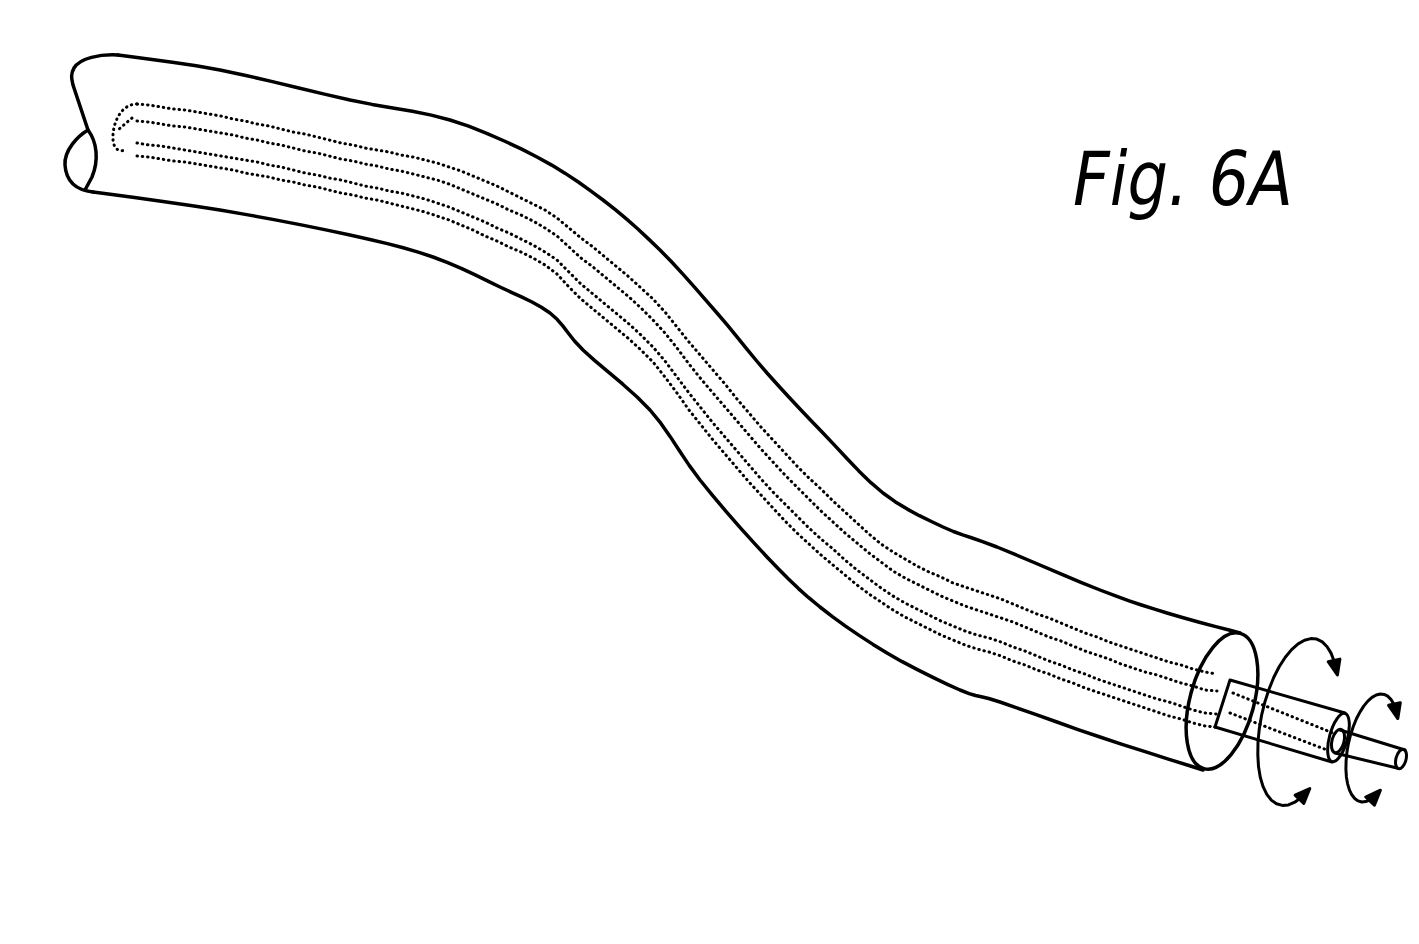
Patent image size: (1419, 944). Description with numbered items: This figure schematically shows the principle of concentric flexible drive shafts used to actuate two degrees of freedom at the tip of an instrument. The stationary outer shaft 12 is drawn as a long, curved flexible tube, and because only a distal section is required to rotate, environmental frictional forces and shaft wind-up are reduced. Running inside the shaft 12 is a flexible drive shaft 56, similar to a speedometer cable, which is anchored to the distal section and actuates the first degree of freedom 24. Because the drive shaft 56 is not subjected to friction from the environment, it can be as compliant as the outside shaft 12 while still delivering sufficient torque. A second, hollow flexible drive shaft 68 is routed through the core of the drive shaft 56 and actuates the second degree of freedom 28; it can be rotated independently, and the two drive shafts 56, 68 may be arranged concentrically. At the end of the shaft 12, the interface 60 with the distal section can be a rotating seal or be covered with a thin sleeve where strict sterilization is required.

The shaft 12 is at (632, 383).
The first degree of freedom 24 is at (1315, 637).
The second degree of freedom 28 is at (1384, 692).
The flexible drive shaft 56 is at (812, 537).
The interface 60 is at (1211, 752).
The flexible drive shaft 68 is at (933, 602).